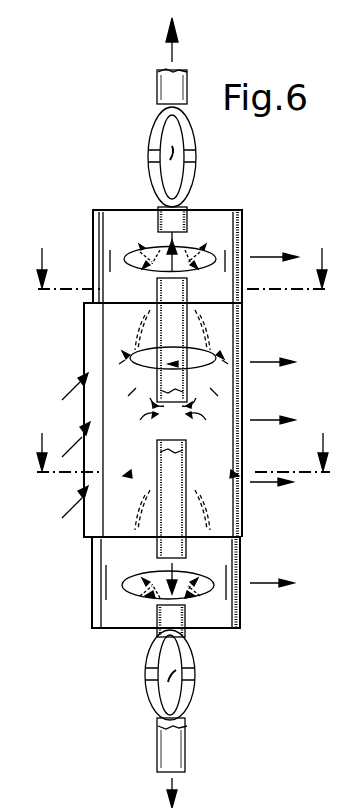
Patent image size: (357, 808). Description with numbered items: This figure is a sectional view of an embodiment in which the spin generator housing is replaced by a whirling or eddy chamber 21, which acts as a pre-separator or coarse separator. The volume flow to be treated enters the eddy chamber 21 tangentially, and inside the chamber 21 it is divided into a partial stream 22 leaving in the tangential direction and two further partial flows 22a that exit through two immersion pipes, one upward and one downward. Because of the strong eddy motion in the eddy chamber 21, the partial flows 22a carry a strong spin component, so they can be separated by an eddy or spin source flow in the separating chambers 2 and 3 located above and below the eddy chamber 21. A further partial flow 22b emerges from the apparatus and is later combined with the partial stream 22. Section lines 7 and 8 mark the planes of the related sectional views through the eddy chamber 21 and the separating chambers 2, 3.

The separating chamber 2 is at (243, 222).
The separating chamber 3 is at (243, 617).
The section line VII-VII 7 is at (185, 453).
The section line VIII-VIII 8 is at (182, 268).
The eddy chamber 21 is at (213, 395).
The partial stream 22 is at (262, 424).
The partial flows 22a is at (157, 436).
The partial flow 22b is at (270, 252).